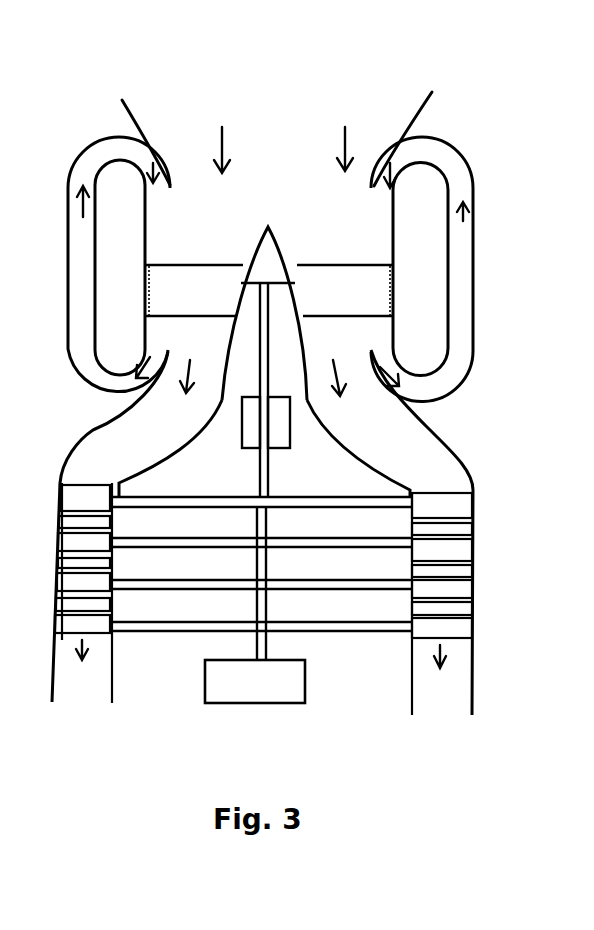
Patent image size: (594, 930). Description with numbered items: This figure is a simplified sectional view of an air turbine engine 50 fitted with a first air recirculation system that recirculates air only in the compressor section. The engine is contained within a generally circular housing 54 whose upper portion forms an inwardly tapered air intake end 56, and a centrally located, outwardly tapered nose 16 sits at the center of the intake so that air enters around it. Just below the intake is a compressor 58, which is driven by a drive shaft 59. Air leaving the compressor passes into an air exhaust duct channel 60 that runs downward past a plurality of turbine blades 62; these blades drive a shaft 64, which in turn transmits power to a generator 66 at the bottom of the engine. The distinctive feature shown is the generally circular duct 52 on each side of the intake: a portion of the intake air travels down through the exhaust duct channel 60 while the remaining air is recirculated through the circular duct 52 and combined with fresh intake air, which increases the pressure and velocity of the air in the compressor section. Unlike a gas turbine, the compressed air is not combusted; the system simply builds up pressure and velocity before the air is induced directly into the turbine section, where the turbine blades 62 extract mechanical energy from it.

The nose 16 is at (278, 237).
The air turbine engine 50 is at (478, 200).
The circular duct 52 is at (473, 298).
The housing 54 is at (473, 572).
The air intake end 56 is at (403, 128).
The compressor 58 is at (330, 267).
The drive shaft 59 is at (275, 497).
The air exhaust duct channel 60 is at (123, 410).
The turbine blades 62 is at (113, 533).
The shaft 64 is at (255, 565).
The generator 66 is at (307, 686).